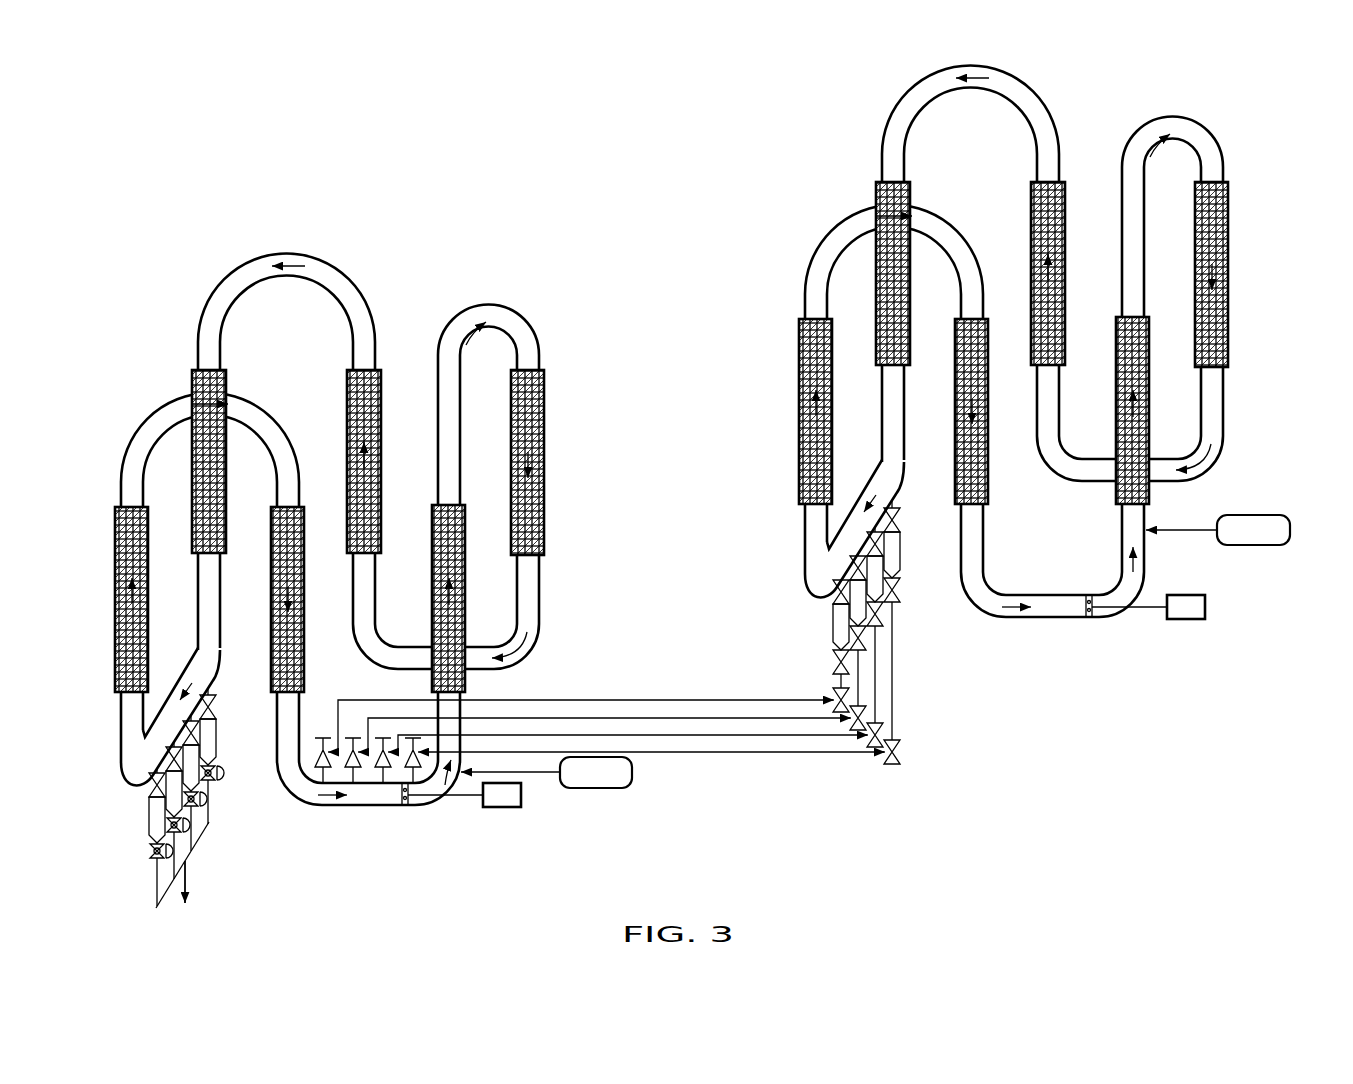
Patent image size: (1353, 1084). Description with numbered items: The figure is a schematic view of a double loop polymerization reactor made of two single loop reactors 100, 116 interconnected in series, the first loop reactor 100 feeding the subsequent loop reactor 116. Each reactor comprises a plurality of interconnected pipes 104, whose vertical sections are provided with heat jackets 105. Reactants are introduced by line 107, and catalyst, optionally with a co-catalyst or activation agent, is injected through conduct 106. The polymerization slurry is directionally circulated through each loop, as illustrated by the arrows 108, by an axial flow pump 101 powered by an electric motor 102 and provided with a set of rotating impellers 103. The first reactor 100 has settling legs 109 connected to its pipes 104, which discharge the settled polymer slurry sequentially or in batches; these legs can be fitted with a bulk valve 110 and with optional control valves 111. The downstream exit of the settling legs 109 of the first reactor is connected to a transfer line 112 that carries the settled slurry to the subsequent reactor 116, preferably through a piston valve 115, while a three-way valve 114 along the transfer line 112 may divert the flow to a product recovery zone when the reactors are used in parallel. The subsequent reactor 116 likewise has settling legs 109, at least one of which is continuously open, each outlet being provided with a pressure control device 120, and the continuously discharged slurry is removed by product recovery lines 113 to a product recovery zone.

The first loop reactor 100 is at (1279, 150).
The axial flow pump 101 is at (430, 810).
The electric motor 102 is at (506, 808).
The set of rotating impellers 103 is at (404, 808).
The interconnected pipes 104 is at (540, 600).
The heat jackets 105 is at (546, 478).
The conduct 106 is at (340, 808).
The line 107 is at (549, 789).
The arrows 108 is at (470, 336).
The settling legs 109 is at (149, 818).
The bulk valve 110 is at (216, 703).
The control valves 111 is at (903, 585).
The transfer line 112 is at (628, 699).
The product recovery lines 113 is at (182, 878).
The three-way valve 114 is at (905, 757).
The piston valve 115 is at (323, 738).
The subsequent loop reactor 116 is at (596, 323).
The pressure control device 120 is at (224, 774).